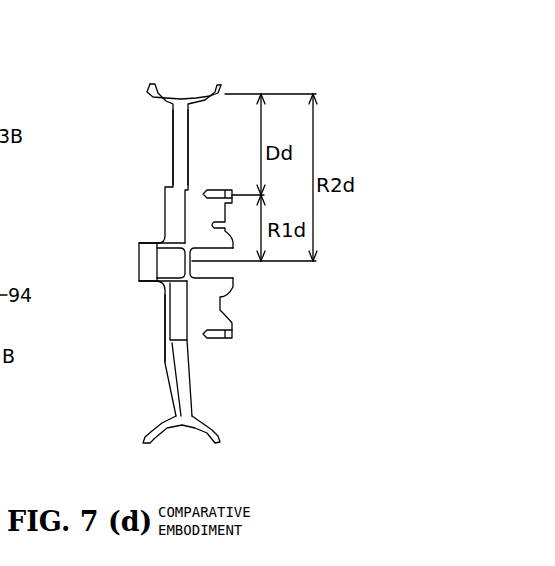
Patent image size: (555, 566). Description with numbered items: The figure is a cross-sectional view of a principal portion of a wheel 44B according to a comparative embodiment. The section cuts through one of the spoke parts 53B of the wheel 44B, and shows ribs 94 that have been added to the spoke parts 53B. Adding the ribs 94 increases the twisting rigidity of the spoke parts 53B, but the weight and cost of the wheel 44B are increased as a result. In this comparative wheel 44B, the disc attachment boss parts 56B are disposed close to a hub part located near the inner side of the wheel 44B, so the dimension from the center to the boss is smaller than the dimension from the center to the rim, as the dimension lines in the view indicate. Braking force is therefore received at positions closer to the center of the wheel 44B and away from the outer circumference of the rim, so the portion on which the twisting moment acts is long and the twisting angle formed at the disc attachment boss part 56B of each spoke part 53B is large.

The wheel 44B is at (233, 72).
The spoke part 53B is at (173, 146).
The rib 94 is at (197, 208).
The disc attachment boss part 56B is at (0, 243).